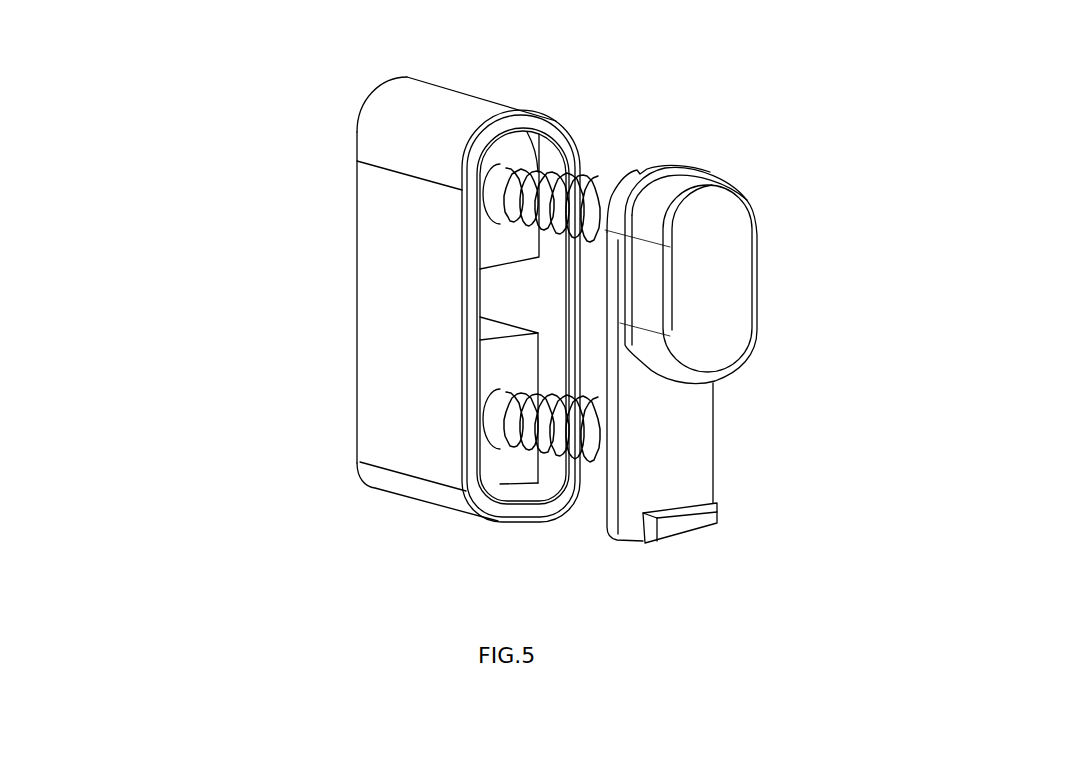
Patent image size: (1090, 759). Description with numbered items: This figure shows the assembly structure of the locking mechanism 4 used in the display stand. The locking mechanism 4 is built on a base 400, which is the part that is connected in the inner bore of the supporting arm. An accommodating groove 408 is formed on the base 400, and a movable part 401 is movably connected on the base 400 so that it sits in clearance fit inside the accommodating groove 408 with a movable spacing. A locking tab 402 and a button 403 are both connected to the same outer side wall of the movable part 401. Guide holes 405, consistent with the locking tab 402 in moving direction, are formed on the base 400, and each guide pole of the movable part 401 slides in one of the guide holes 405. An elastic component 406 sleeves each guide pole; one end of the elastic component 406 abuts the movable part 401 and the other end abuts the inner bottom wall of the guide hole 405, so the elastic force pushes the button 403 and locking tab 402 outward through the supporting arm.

The locking mechanism 4 is at (338, 265).
The base 400 is at (428, 313).
The movable part 401 is at (668, 418).
The locking tab 402 is at (712, 512).
The button 403 is at (723, 283).
The guide hole 405 is at (487, 188).
The elastic component 406 is at (569, 188).
The accommodating groove 408 is at (555, 358).